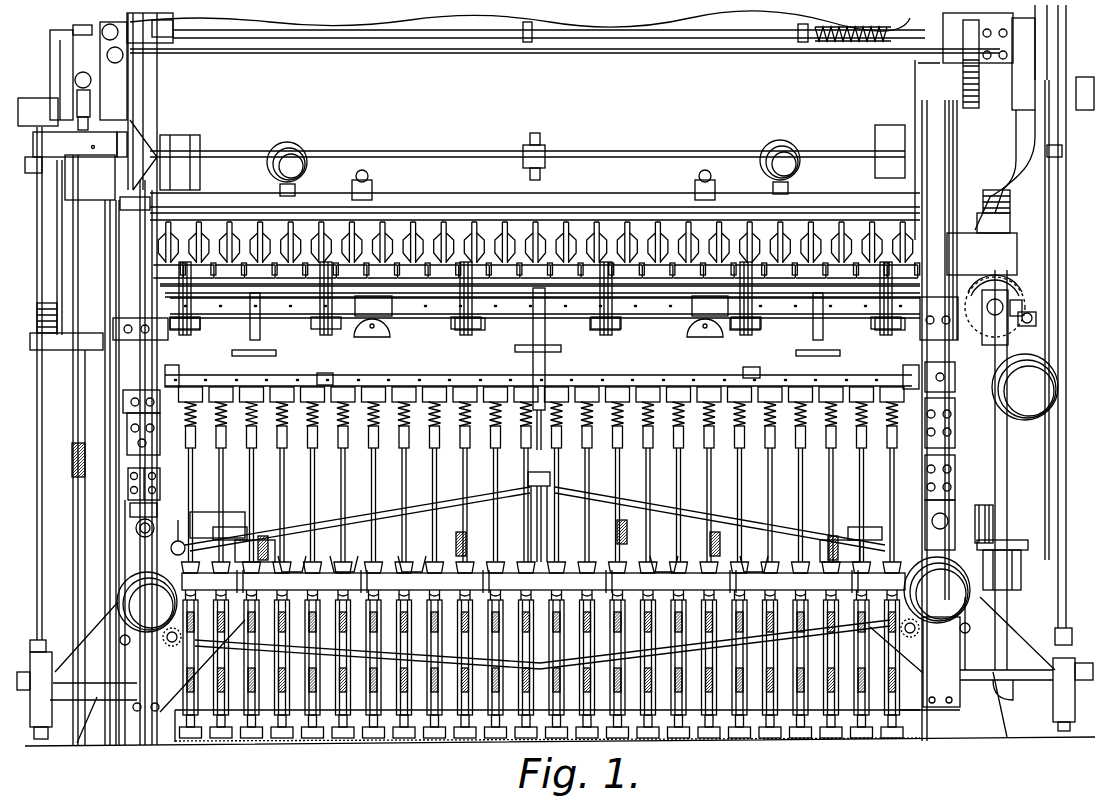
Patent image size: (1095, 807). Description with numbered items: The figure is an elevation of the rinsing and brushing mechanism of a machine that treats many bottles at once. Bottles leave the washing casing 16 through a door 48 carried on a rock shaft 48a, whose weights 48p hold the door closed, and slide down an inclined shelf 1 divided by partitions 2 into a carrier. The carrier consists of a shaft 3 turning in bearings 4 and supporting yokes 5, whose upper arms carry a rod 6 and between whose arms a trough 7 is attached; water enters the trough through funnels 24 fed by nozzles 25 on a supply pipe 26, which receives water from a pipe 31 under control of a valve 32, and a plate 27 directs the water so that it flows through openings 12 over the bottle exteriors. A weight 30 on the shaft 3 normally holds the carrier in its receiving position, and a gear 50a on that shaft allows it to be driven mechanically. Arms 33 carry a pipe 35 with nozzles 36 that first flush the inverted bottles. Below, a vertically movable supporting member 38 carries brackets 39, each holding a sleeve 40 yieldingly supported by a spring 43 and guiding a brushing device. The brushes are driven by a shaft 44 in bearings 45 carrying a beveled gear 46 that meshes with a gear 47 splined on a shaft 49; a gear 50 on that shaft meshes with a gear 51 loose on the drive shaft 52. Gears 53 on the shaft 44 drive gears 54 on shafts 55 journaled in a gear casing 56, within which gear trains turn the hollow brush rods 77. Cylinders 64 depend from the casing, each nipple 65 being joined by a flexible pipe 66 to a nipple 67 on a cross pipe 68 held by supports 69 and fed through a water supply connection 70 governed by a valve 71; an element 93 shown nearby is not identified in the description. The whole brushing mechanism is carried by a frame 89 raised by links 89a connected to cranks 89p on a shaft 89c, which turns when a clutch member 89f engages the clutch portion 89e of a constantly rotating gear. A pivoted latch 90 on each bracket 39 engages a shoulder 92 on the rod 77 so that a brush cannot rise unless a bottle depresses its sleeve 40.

The inclined shelf 1 is at (588, 230).
The partitions 2 is at (412, 226).
The shaft 3 is at (175, 328).
The bearings 4 is at (140, 325).
The yokes 5 is at (185, 335).
The rod 6 is at (432, 277).
The trough 7 is at (575, 302).
The openings 12 is at (305, 302).
The casing 16 is at (697, 77).
The funnels 24 is at (370, 333).
The nozzles 25 is at (352, 182).
The water supply pipe 26 is at (548, 200).
The plate 27 is at (545, 306).
The weight 30 is at (1025, 387).
The pipe 31 is at (110, 477).
The valve 32 is at (135, 195).
The arms 33 is at (380, 462).
The pipe 35 is at (430, 372).
The nozzles 36 is at (790, 392).
The supporting member 38 is at (516, 422).
The brackets 39 is at (250, 395).
The sleeve 40 is at (404, 395).
The spring 43 is at (305, 395).
The shaft 44 is at (424, 535).
The bearings 45 is at (243, 527).
The beveled gear 46 is at (993, 520).
The gear 47 is at (1005, 545).
The door 48 is at (598, 178).
The rock shaft 48a is at (395, 157).
The weights 48p is at (290, 152).
The shaft 49 is at (1000, 478).
The gear 50 is at (1030, 275).
The gear 50a is at (45, 305).
The gear 51 is at (1025, 298).
The drive shaft 52 is at (1038, 317).
The gears 53 is at (263, 536).
The gears 54 is at (300, 548).
The shafts 55 is at (458, 532).
The gear casing 56 is at (351, 553).
The cylinders 64 is at (195, 656).
The nipple 65 is at (290, 738).
The flexible pipe 66 is at (432, 740).
The nipples 67 is at (918, 580).
The pipe 68 is at (388, 498).
The supports 69 is at (543, 581).
The water supply connection 70 is at (205, 512).
The valve 71 is at (172, 550).
The hollow rod 77 is at (345, 478).
The frame 89 is at (552, 670).
The links 89a is at (42, 505).
The shaft 89c is at (616, 40).
The clutch portion 89e is at (968, 110).
The clutch member 89f is at (925, 60).
The cranks 89p is at (52, 68).
The latch member 90 is at (700, 440).
The circumferential shoulder 92 is at (552, 462).
The rod 93 is at (684, 562).